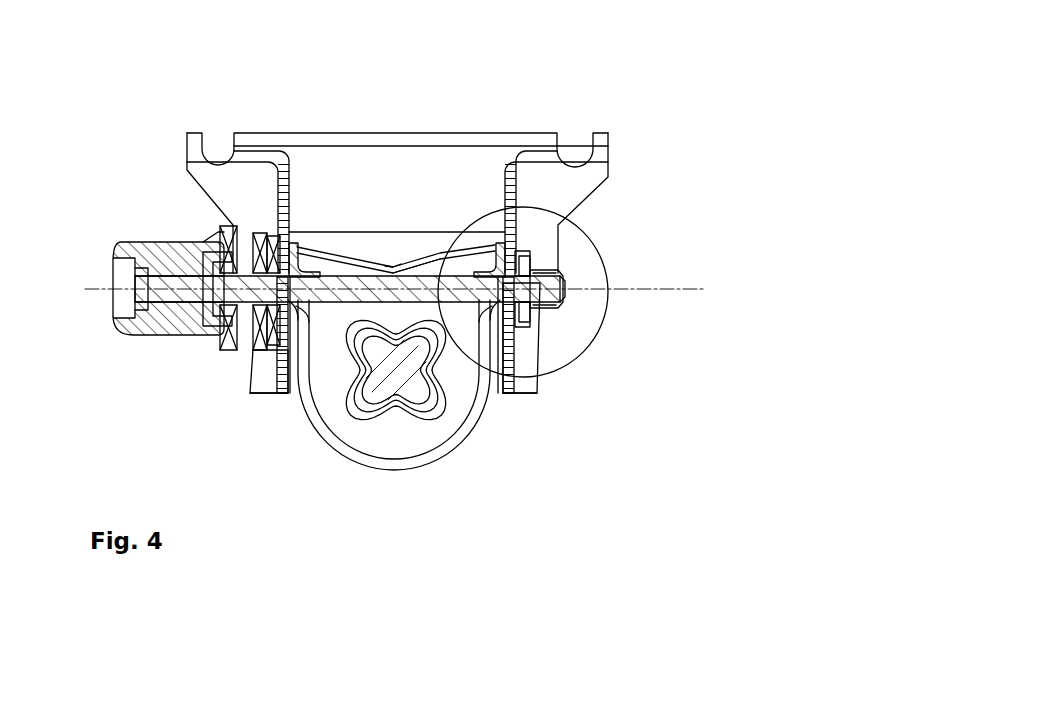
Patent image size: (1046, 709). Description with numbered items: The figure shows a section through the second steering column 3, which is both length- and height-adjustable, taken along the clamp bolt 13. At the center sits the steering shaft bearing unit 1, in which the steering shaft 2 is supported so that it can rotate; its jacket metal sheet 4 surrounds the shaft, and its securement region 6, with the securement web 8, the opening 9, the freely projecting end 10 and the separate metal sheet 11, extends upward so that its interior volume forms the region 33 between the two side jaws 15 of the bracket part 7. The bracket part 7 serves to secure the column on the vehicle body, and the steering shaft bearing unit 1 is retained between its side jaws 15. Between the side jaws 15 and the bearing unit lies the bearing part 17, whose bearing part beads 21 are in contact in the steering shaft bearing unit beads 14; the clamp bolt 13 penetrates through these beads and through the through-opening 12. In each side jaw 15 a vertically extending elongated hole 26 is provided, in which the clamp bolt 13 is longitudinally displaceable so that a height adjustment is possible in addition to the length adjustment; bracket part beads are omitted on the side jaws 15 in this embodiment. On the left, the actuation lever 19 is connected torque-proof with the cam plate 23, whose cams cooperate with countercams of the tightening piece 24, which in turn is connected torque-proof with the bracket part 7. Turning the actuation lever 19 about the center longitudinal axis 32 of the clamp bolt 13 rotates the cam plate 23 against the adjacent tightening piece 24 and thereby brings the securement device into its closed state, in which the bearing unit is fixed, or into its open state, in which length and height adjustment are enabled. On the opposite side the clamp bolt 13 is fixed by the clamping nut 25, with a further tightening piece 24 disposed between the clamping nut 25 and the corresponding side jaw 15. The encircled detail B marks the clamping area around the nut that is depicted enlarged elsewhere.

The steering shaft bearing unit 1 is at (463, 457).
The steering shaft 2 is at (401, 396).
The steering column 3 is at (497, 108).
The jacket metal sheet 4 is at (488, 428).
The securement region 6 is at (299, 398).
The bracket part 7 is at (590, 167).
The securement web 8 is at (286, 322).
The opening 9 is at (431, 272).
The freely projecting end 10 is at (292, 233).
The separate metal sheet 11 is at (345, 256).
The through-opening 12 is at (258, 312).
The clamp bolt 13 is at (200, 243).
The steering shaft bearing unit bead 14 is at (300, 335).
The side jaw 15 is at (287, 187).
The bearing part 17 is at (298, 243).
The actuation lever 19 is at (135, 322).
The bearing part bead 21 is at (213, 320).
The cam plate 23 is at (222, 228).
The tightening piece 24 is at (272, 322).
The clamping nut 25 is at (563, 306).
The elongated hole 26 is at (278, 393).
The center longitudinal axis 32 is at (152, 270).
The region 33 is at (396, 243).
The detail B is at (608, 297).